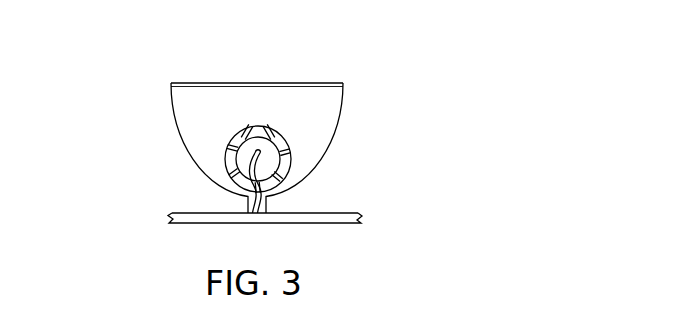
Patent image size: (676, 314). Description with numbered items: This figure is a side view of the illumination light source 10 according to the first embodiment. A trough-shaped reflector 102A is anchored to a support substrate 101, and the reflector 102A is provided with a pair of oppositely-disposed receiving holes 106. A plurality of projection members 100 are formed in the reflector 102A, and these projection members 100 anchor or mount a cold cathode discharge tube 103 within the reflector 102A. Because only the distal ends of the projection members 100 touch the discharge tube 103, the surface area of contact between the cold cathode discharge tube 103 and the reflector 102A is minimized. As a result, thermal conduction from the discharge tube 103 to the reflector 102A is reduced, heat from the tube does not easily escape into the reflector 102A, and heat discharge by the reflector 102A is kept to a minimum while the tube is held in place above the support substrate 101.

The illumination light source 10 is at (392, 135).
The projection members 100 is at (289, 152).
The support substrate 101 is at (166, 212).
The trough-shaped reflector 102A is at (320, 83).
The cold cathode discharge tube 103 is at (249, 127).
The receiving holes 106 is at (265, 126).